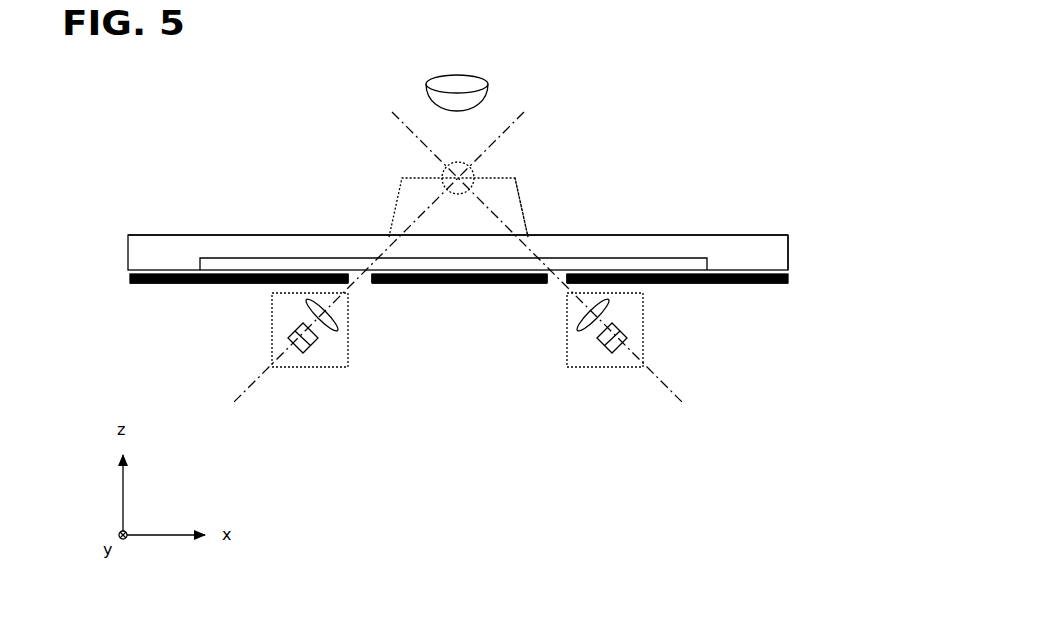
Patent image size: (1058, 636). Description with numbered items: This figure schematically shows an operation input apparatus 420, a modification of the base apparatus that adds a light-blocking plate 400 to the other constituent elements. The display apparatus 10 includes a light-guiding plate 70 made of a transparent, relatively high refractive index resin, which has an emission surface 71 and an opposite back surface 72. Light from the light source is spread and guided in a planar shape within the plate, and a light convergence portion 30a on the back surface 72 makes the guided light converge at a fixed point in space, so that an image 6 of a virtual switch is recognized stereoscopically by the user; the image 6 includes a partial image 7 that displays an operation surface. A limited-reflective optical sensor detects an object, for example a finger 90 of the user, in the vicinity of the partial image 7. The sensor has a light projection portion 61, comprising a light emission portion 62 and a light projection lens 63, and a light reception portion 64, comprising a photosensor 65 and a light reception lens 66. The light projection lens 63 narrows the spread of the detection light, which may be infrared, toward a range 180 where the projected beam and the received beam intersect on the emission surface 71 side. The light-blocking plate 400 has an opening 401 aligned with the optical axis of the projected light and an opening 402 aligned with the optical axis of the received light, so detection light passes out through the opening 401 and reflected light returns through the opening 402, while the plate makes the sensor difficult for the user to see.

The display apparatus 10 is at (150, 231).
The partial image 7 is at (390, 178).
The opening 401 is at (352, 262).
The opening 402 is at (562, 262).
The range 180 is at (480, 173).
The image 6 is at (517, 182).
The light convergence portion 30a is at (600, 258).
The emission surface 71 is at (717, 235).
The light-guiding plate 70 is at (792, 253).
The back surface 72 is at (735, 283).
The operation input apparatus 420 is at (777, 31).
The finger 90 is at (488, 90).
The light-blocking plate 400 is at (177, 283).
The light projection portion 61 is at (260, 340).
The light projection lens 63 is at (350, 325).
The light emission portion 62 is at (317, 347).
The light reception portion 64 is at (656, 355).
The light reception lens 66 is at (573, 325).
The photosensor 65 is at (602, 348).